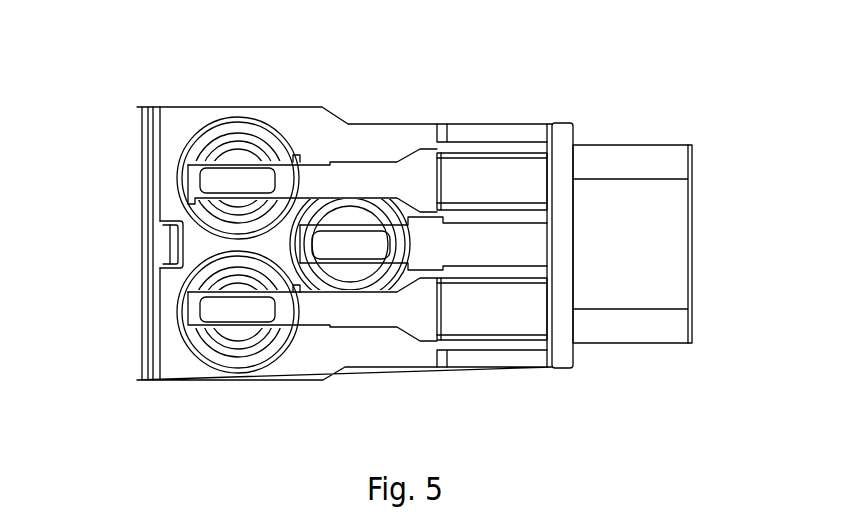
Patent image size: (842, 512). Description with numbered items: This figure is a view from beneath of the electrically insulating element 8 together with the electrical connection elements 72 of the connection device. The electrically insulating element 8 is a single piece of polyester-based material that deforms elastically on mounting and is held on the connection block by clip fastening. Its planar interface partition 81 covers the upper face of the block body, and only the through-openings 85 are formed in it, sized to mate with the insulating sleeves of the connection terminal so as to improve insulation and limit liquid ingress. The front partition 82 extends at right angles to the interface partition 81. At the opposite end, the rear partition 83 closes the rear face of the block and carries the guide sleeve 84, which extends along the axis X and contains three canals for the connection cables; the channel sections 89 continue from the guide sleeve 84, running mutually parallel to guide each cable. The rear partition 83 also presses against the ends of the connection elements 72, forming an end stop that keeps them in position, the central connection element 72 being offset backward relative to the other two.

The electrically insulating element 8 is at (537, 367).
The connection elements 72 is at (348, 172).
The interface partition 81 is at (318, 360).
The front partition 82 is at (150, 242).
The rear partition 83 is at (553, 130).
The guide sleeve 84 is at (673, 165).
The through-openings 85 is at (228, 142).
The channel sections 89 is at (480, 154).